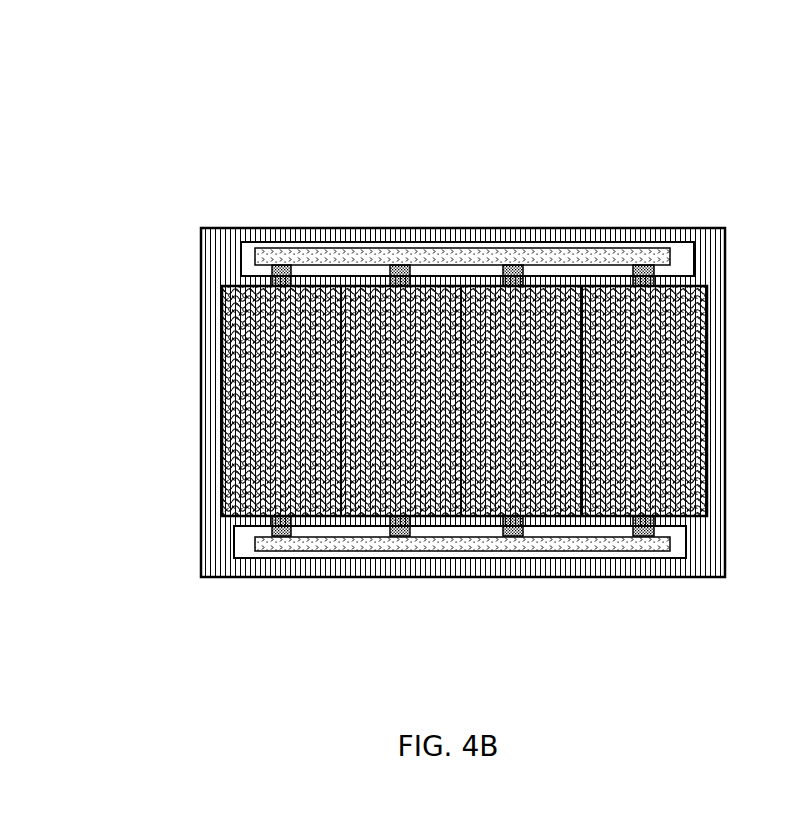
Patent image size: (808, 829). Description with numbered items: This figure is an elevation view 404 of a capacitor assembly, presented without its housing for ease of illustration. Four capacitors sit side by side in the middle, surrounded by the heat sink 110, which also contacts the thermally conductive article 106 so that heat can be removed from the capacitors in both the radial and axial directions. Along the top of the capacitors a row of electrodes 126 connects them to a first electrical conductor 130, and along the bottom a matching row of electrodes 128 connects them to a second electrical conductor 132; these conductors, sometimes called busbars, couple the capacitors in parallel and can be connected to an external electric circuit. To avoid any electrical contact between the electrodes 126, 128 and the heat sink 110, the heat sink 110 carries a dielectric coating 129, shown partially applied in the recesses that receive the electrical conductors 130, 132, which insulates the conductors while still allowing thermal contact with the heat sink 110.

The elevation view 404 is at (597, 125).
The heat sink 110 is at (708, 300).
The coating 129 is at (673, 248).
The electrical conductor 130 is at (258, 248).
The electrical conductor 132 is at (258, 537).
The electrode 126 is at (633, 258).
The electrode 128 is at (636, 528).
The thermally conductive article 106 is at (640, 365).